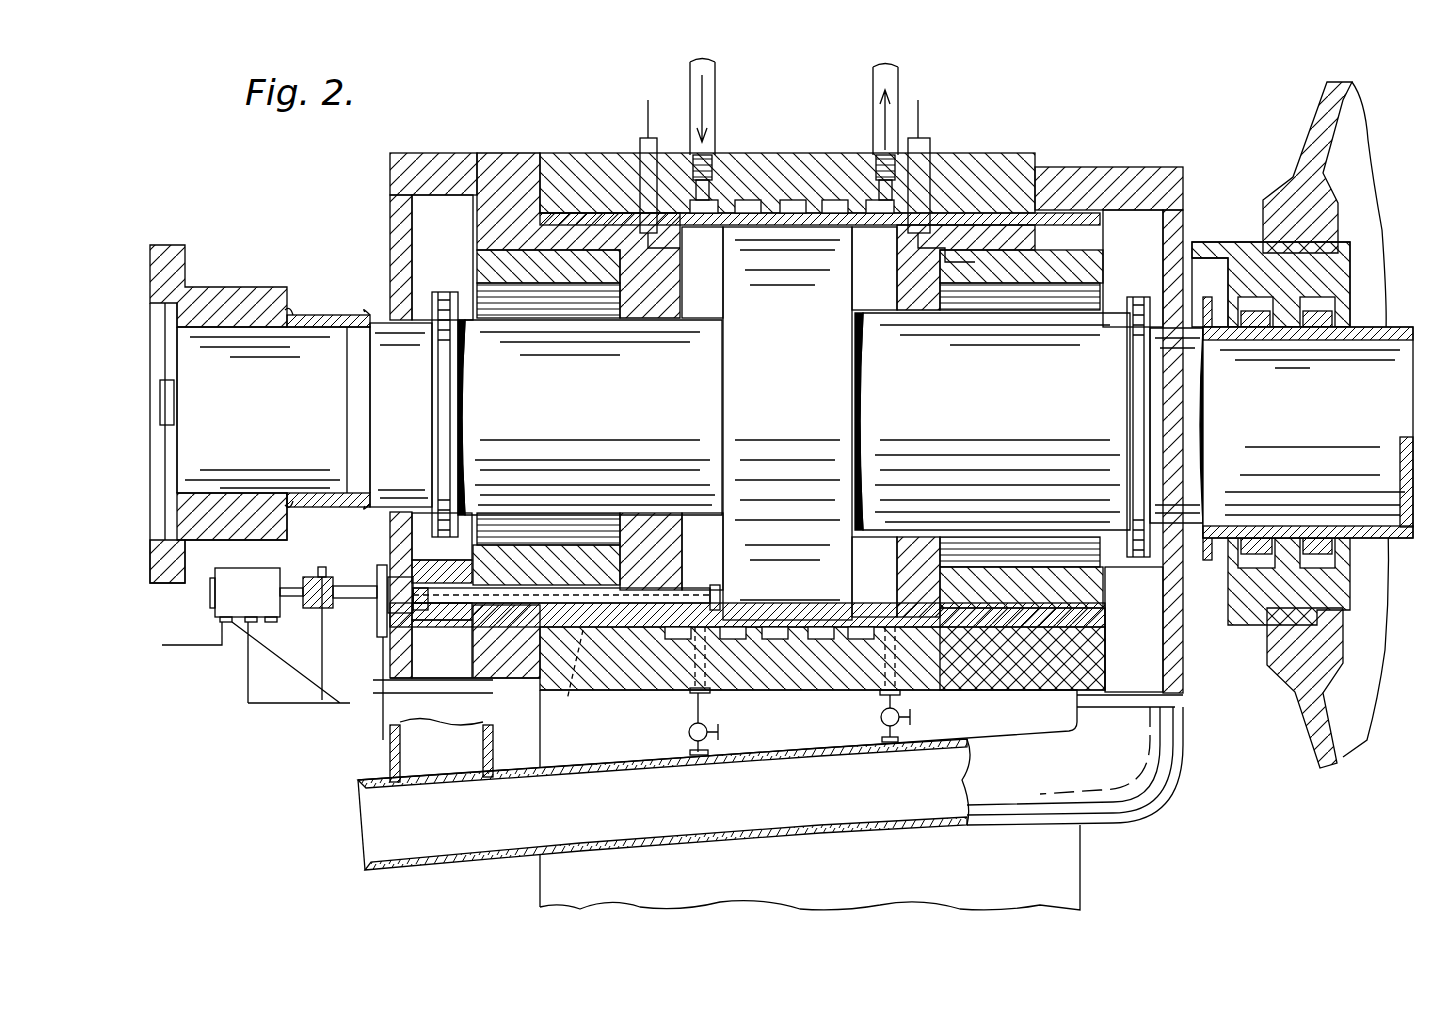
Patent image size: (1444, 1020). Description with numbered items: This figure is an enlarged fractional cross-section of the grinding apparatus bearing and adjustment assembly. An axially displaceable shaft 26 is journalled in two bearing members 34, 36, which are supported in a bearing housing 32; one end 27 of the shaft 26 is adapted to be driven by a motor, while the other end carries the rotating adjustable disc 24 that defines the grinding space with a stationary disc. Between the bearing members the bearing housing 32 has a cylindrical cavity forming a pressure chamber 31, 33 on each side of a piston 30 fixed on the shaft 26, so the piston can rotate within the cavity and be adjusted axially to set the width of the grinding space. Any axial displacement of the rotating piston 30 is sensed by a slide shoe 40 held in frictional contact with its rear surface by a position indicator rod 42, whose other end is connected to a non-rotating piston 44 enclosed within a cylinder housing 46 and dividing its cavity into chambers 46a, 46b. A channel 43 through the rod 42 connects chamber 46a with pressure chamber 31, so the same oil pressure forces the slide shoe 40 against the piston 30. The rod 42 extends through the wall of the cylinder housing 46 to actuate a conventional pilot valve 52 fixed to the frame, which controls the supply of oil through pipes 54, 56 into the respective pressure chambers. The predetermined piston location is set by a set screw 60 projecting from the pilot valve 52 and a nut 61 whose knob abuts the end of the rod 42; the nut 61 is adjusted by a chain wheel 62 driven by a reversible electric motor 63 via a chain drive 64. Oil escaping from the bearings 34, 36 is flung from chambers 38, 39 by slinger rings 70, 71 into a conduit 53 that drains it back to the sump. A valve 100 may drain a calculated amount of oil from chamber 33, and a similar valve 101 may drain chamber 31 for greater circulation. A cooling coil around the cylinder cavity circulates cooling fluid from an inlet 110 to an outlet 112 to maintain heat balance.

The rotating adjustable disc 24 is at (1303, 140).
The shaft 26 is at (1380, 391).
The end of the shaft 27 is at (222, 290).
The piston 30 is at (760, 260).
The pressure chamber 31 is at (690, 240).
The bearing housing 32 is at (1075, 175).
The pressure chamber 33 is at (868, 268).
The bearing member 34 is at (1078, 262).
The bearing member 36 is at (478, 263).
The chamber 38 is at (425, 218).
The chamber 39 is at (1160, 670).
The slide shoe 40 is at (715, 580).
The position indicator rod 42 is at (352, 585).
The channel 43 is at (568, 677).
The non-rotating piston 44 is at (420, 590).
The cylinder housing 46 is at (425, 620).
The chamber 46a is at (380, 600).
The chamber 46b is at (452, 620).
The pilot valve 52 is at (245, 575).
The conduit 53 is at (1120, 826).
The pipe 54 is at (640, 150).
The pipe 56 is at (930, 150).
The set screw 60 is at (310, 618).
The nut 61 is at (334, 596).
The chain wheel 62 is at (322, 567).
The reversible electric motor 63 is at (352, 700).
The chain drive 64 is at (320, 700).
The slinger ring 70 is at (446, 300).
The slinger ring 71 is at (1133, 560).
The valve 100 is at (880, 718).
The valve 101 is at (688, 733).
The inlet 110 is at (715, 80).
The outlet 112 is at (900, 85).